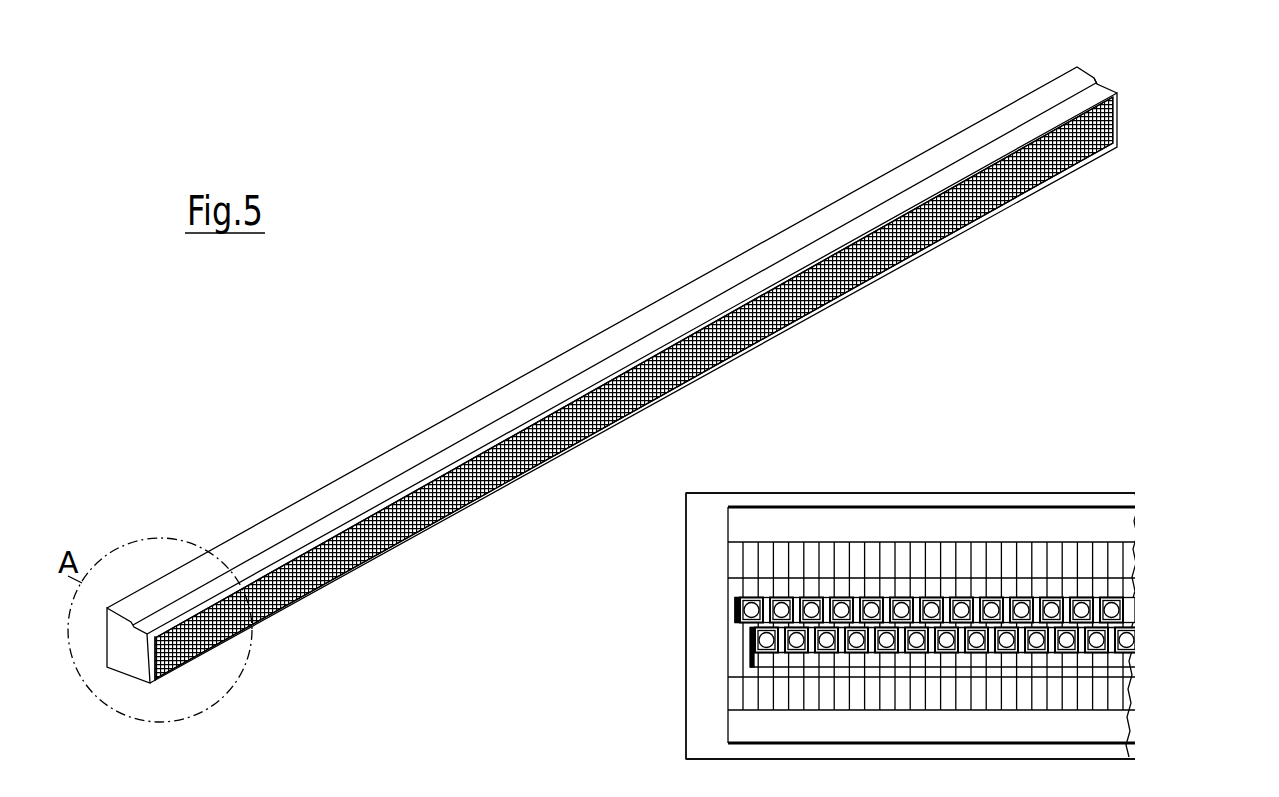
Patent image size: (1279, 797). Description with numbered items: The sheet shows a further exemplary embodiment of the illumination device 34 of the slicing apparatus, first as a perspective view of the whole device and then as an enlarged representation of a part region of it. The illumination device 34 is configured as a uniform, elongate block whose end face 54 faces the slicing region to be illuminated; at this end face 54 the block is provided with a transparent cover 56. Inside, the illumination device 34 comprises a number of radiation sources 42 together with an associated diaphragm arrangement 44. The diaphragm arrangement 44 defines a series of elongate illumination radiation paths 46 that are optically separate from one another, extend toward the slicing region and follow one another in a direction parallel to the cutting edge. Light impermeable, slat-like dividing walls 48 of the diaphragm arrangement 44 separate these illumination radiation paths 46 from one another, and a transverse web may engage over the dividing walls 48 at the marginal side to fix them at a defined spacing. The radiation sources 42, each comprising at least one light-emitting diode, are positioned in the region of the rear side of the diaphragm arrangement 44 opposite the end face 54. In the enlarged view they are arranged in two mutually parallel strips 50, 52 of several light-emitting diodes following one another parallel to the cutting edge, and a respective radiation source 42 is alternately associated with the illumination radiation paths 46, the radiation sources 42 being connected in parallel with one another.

In FIG. 5, the illumination device 34 is at (535, 318).
In FIG. 6, the illumination device 34 is at (1013, 465).
In FIG. 5, the diaphragm arrangement 44 is at (713, 266).
In FIG. 6, the diaphragm arrangement 44 is at (768, 492).
In FIG. 5, the end face 54 is at (458, 507).
In FIG. 5, the transparent cover 56 is at (634, 388).
In FIG. 6, the radiation source 42 is at (735, 603).
In FIG. 6, the illumination radiation path 46 is at (797, 557).
In FIG. 6, the dividing wall 48 is at (933, 560).
In FIG. 6, the first strip of radiation sources 50 is at (1127, 605).
In FIG. 6, the second strip of radiation sources 52 is at (1128, 635).